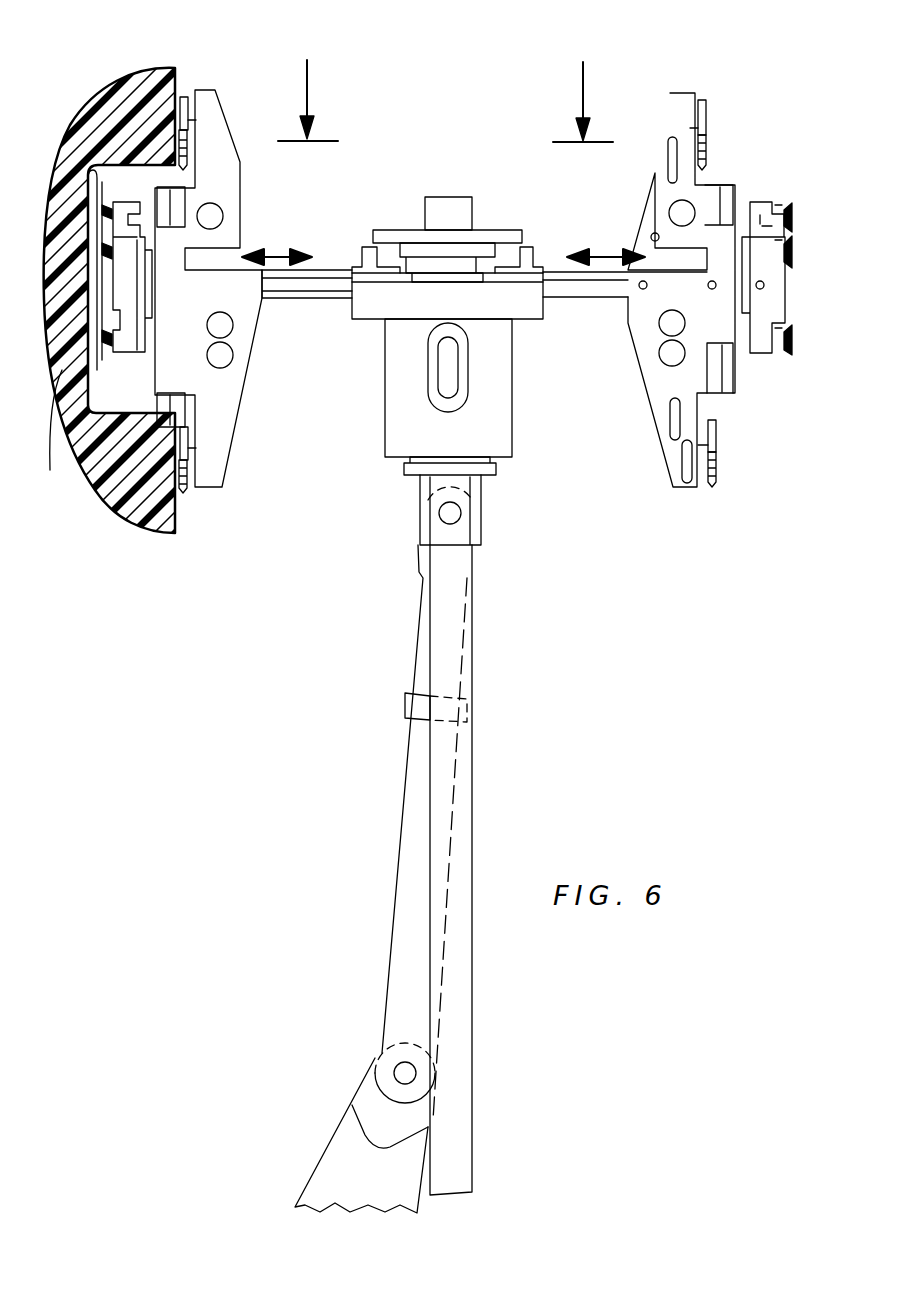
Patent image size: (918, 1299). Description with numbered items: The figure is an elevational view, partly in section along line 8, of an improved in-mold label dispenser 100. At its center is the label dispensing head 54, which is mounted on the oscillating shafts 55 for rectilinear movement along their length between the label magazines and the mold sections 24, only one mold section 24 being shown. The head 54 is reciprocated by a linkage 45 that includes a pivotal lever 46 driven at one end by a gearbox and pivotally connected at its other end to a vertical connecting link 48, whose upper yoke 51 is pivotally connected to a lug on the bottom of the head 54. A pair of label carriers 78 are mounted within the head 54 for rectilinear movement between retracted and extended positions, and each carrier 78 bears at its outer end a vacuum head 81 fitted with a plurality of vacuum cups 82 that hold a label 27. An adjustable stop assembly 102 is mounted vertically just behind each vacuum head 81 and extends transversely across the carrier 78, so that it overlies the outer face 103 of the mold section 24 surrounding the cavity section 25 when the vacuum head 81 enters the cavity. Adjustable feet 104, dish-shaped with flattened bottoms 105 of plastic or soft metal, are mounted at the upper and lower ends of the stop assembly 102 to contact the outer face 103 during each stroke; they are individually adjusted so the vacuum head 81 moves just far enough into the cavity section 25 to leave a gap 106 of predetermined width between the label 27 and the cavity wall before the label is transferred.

The section line 8- 8 is at (445, 86).
The mold section 24 is at (110, 90).
The cavity section 25 is at (107, 396).
The label 27 is at (104, 360).
The reciprocating linkage 45 is at (375, 1054).
The pivotal lever 46 is at (318, 1180).
The connecting link 48 is at (395, 925).
The yoke 51 is at (484, 518).
The label dispensing head 54 is at (505, 430).
The oscillating shafts 55 is at (468, 965).
The label carrier 78 is at (335, 270).
The vacuum head 81 is at (125, 284).
The vacuum cups 82 is at (108, 195).
The in-mold label dispenser 100 is at (472, 118).
The adjustable stop assembly 102 is at (255, 340).
The outer face 103 is at (181, 97).
The adjustable feet 104 is at (190, 100).
The flattened bottoms 105 is at (178, 120).
The gap 106 is at (50, 420).